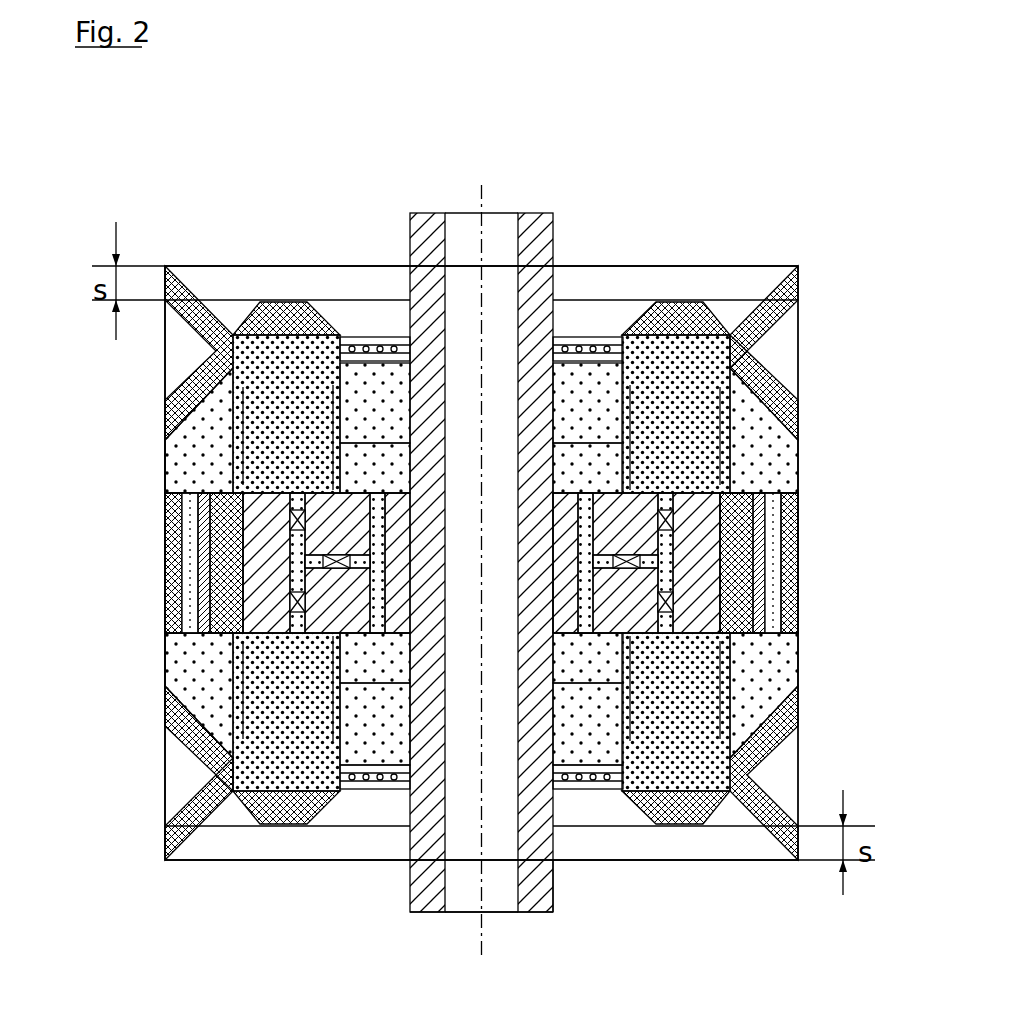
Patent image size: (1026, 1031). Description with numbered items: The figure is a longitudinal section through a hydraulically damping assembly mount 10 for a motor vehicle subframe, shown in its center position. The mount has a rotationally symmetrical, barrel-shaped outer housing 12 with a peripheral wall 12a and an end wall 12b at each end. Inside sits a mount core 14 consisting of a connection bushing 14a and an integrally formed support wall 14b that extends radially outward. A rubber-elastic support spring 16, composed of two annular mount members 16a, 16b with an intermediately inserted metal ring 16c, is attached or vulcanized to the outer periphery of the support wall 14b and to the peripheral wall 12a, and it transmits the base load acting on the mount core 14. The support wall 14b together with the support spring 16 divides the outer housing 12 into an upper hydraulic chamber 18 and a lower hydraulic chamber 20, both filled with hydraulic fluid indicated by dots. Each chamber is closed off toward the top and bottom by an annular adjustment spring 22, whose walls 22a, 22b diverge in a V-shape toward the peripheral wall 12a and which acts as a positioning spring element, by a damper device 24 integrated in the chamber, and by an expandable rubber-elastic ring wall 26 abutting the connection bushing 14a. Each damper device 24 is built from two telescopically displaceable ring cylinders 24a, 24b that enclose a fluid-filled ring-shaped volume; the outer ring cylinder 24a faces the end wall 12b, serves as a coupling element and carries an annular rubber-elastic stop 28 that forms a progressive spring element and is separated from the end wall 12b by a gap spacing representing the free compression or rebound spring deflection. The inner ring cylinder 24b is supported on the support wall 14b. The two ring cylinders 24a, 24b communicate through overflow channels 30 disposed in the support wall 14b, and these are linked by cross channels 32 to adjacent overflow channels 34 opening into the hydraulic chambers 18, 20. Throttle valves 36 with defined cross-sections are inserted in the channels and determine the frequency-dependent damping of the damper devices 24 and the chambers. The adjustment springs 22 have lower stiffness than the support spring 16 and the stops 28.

The hydraulically damping assembly mount 10 is at (628, 155).
The outer housing 12 is at (156, 789).
The peripheral wall 12a is at (160, 390).
The end wall 12b is at (272, 265).
The mount core 14 is at (405, 260).
The connection bushing 14a is at (553, 878).
The support wall 14b is at (606, 492).
The support spring 16 is at (163, 640).
The annular mount member 16a is at (192, 497).
The annular mount member 16b is at (192, 512).
The metal ring 16c is at (192, 582).
The upper hydraulic chamber 18 is at (390, 483).
The lower hydraulic chamber 20 is at (390, 738).
The adjustment spring 22 is at (205, 295).
The wall of adjustment spring 22a is at (788, 318).
The wall of adjustment spring 22b is at (768, 375).
The damper device 24 is at (228, 428).
The outer ring cylinder 24a is at (730, 408).
The inner ring cylinder 24b is at (722, 468).
The ring wall 26 is at (375, 355).
The rubber-elastic stop 28 is at (703, 308).
The overflow channel 30 is at (770, 562).
The cross channel 32 is at (622, 625).
The overflow channel 34 is at (573, 587).
The throttle valve 36 is at (620, 556).